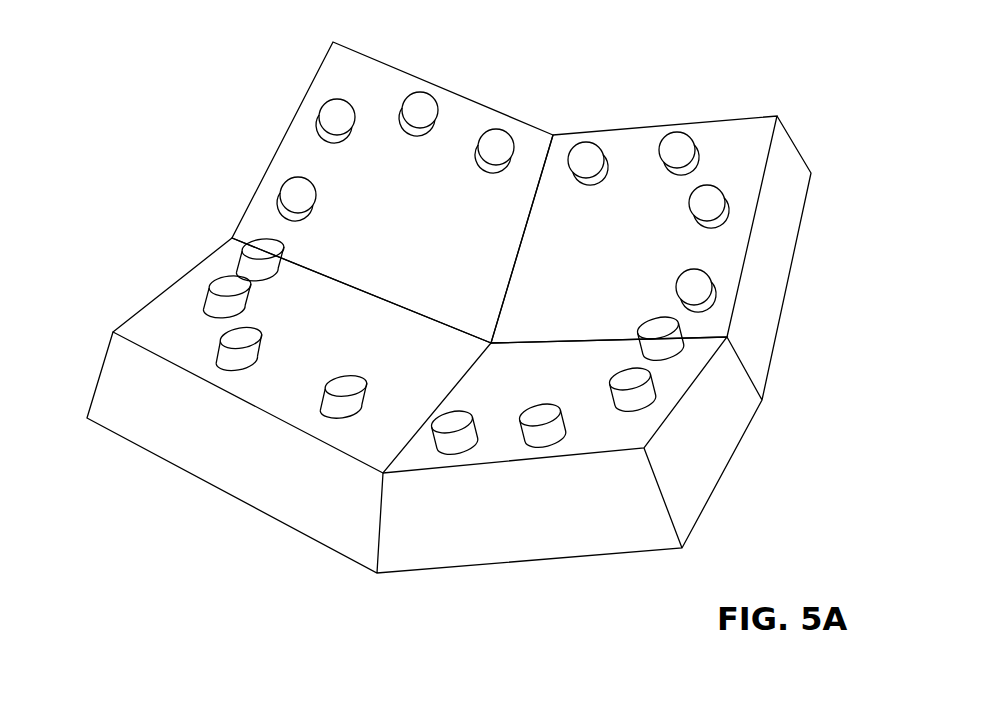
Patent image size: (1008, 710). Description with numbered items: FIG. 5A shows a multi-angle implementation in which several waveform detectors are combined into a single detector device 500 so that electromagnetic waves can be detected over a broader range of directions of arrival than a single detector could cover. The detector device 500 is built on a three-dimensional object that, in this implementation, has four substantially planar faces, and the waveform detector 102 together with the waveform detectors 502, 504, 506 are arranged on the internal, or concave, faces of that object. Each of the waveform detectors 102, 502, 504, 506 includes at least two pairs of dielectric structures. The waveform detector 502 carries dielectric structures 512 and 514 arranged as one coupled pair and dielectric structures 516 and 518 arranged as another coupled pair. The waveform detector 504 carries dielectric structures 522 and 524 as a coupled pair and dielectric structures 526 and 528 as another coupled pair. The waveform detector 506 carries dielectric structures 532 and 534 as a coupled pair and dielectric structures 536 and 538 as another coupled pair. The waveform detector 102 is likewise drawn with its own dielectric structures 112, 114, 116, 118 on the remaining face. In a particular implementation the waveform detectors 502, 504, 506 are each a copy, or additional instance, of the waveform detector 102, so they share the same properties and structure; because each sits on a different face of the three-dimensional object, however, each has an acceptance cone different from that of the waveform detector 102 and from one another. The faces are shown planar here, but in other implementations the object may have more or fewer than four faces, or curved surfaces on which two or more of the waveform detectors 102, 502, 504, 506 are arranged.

The detector device 500 is at (150, 52).
The waveform detector 502 is at (132, 292).
The waveform detector 504 is at (290, 72).
The waveform detector 506 is at (776, 75).
The waveform detector 102 is at (748, 503).
The dielectric structure 512 is at (346, 376).
The dielectric structure 514 is at (262, 342).
The dielectric structure 516 is at (214, 276).
The dielectric structure 518 is at (267, 282).
The dielectric structure 522 is at (315, 202).
The dielectric structure 524 is at (348, 132).
The dielectric structure 526 is at (432, 96).
The dielectric structure 528 is at (509, 134).
The dielectric structure 532 is at (578, 177).
The dielectric structure 534 is at (675, 133).
The dielectric structure 536 is at (698, 223).
The dielectric structure 538 is at (679, 275).
The peg 112 is at (645, 320).
The peg 114 is at (612, 371).
The peg 116 is at (532, 443).
The peg 118 is at (460, 410).